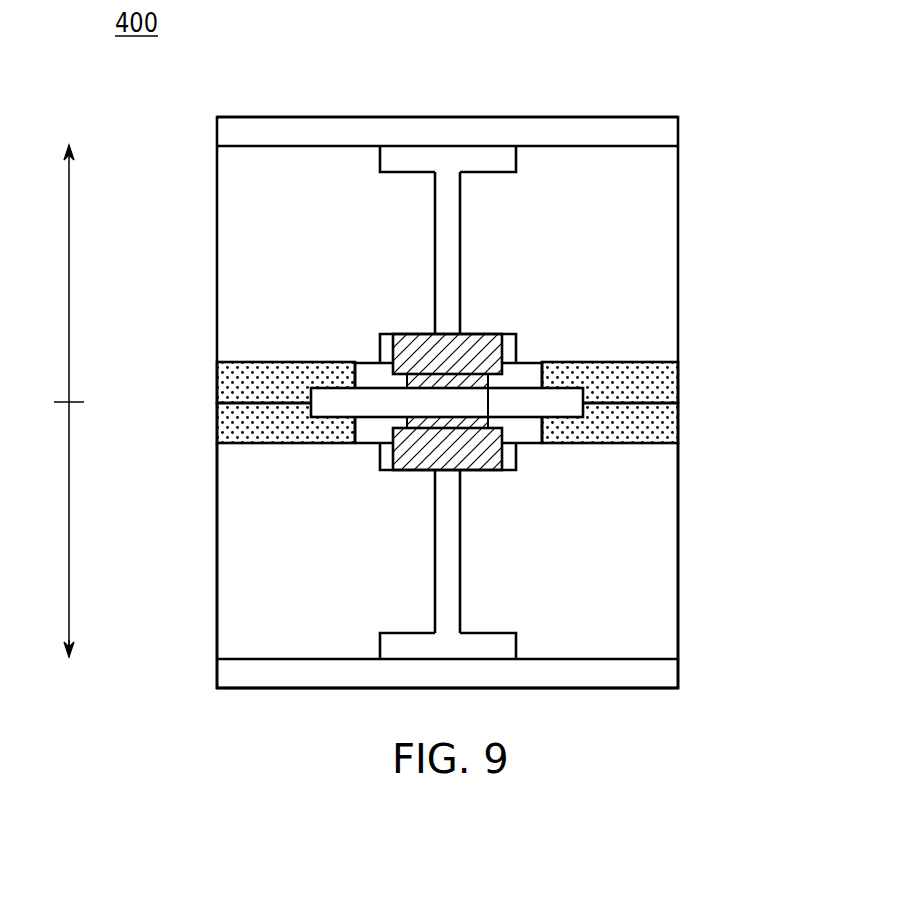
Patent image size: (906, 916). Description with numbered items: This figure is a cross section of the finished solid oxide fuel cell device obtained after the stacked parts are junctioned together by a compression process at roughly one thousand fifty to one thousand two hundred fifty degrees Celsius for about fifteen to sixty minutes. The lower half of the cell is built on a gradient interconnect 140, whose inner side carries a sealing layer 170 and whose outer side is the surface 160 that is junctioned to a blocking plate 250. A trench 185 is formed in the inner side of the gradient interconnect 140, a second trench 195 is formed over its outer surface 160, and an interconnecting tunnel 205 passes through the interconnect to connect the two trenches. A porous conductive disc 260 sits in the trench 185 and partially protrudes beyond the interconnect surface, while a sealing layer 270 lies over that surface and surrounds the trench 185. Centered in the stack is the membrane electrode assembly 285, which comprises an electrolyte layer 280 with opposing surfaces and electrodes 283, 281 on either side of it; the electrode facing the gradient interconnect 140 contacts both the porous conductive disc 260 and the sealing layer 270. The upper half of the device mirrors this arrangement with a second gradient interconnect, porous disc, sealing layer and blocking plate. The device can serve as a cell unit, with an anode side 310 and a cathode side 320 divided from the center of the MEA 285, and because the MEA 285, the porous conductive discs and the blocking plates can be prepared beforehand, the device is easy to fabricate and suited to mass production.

The anode side 310 is at (71, 387).
The cathode side 320 is at (71, 664).
The gradient interconnect 140 is at (215, 552).
The second surface 160 is at (242, 659).
The sealing layer 170 is at (240, 443).
The trench 185 is at (518, 453).
The trench 195 is at (518, 645).
The interconnecting tunnel 205 is at (462, 548).
The blocking plate 250 is at (658, 672).
The porous conductive disc 260 is at (417, 456).
The sealing layer 270 is at (588, 437).
The electrolyte layer 280 is at (572, 403).
The adhesive layer 281 is at (486, 423).
The adhesive layer 283 is at (486, 380).
The membrane electrode assembly 285 is at (745, 375).